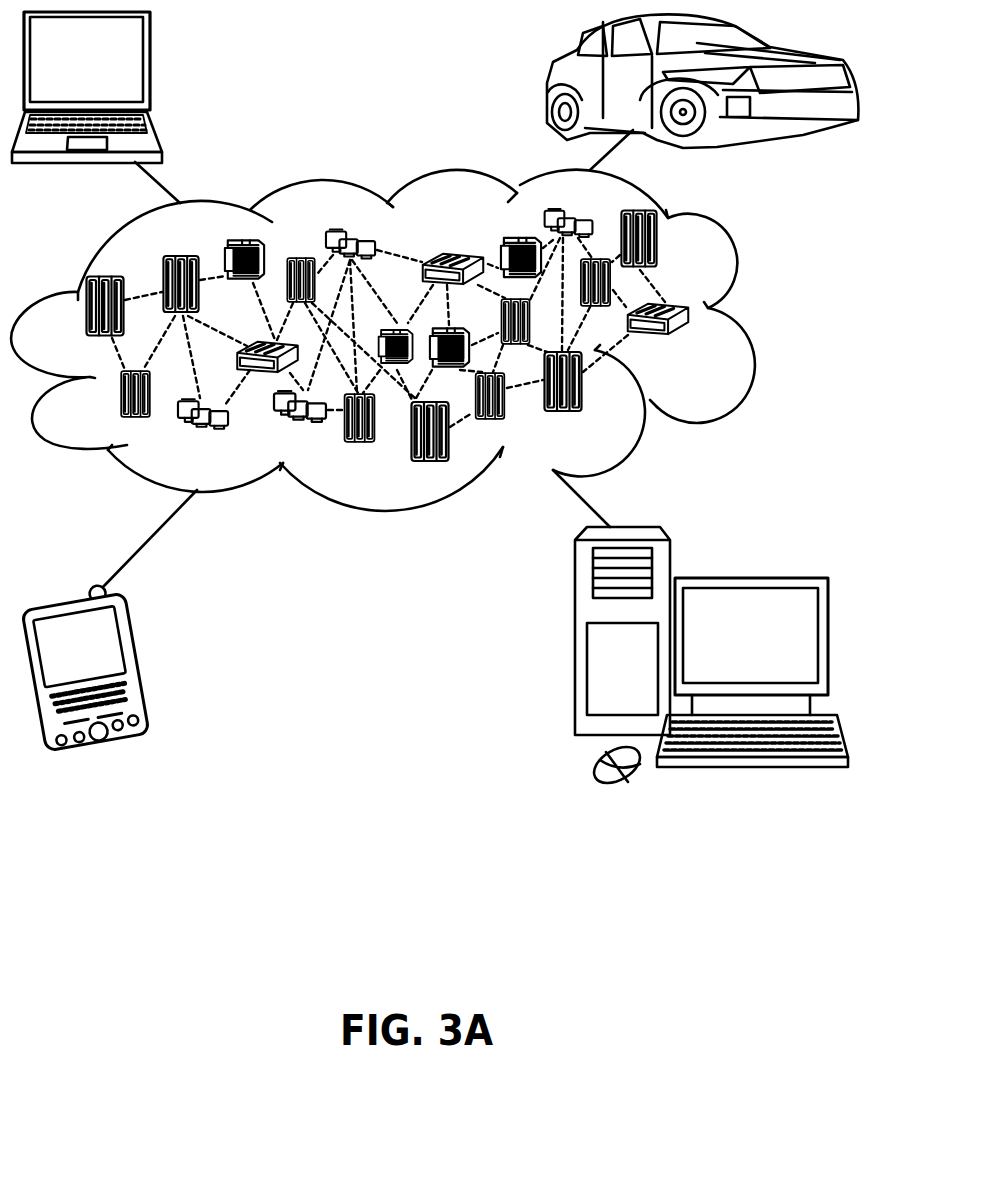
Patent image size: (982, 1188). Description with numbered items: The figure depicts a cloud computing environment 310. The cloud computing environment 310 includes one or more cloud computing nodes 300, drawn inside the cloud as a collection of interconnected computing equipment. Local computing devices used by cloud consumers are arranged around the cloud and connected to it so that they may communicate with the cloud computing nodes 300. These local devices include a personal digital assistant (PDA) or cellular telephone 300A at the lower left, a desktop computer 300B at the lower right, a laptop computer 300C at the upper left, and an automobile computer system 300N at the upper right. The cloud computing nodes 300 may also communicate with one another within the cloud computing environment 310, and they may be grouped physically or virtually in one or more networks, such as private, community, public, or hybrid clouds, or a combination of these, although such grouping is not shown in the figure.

The cloud computing nodes 300 is at (695, 343).
The cloud computing environment 310 is at (745, 317).
The personal digital assistant (PDA) or cellular telephone 300A is at (140, 662).
The desktop computer 300B is at (745, 578).
The laptop computer 300C is at (150, 68).
The automobile computer system 300N is at (548, 80).